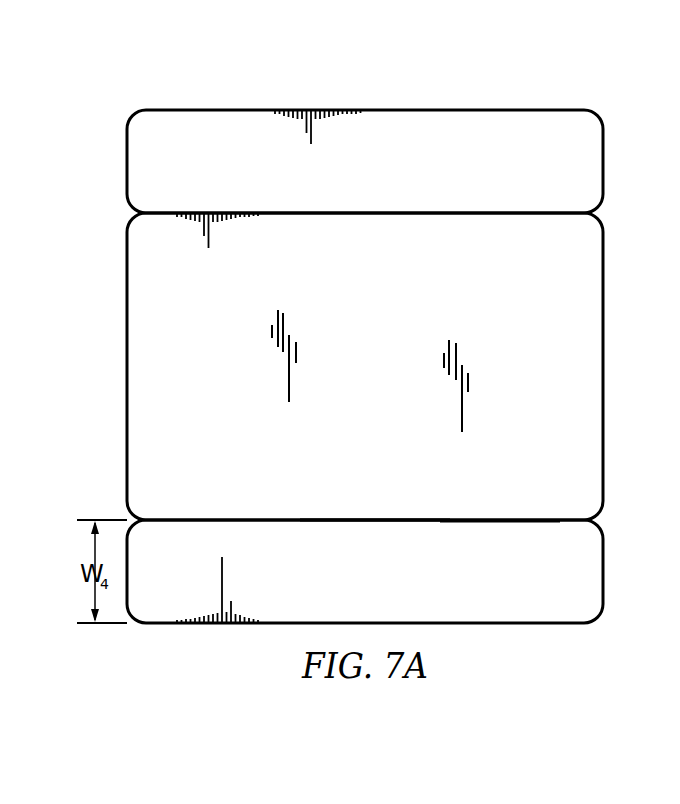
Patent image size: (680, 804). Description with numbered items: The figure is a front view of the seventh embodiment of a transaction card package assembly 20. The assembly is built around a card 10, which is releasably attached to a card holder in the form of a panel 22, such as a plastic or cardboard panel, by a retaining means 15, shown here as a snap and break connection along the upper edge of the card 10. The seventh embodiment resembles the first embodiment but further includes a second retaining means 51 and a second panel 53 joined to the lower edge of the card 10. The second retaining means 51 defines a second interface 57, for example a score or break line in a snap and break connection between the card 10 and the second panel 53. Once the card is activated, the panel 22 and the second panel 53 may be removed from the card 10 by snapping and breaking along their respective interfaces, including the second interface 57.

The transaction card package assembly 20 is at (122, 66).
The panel 22 is at (475, 125).
The retaining means 15 is at (273, 213).
The card 10 is at (328, 351).
The second retaining means 51 is at (365, 518).
The second interface 57 is at (478, 520).
The second panel 53 is at (403, 571).